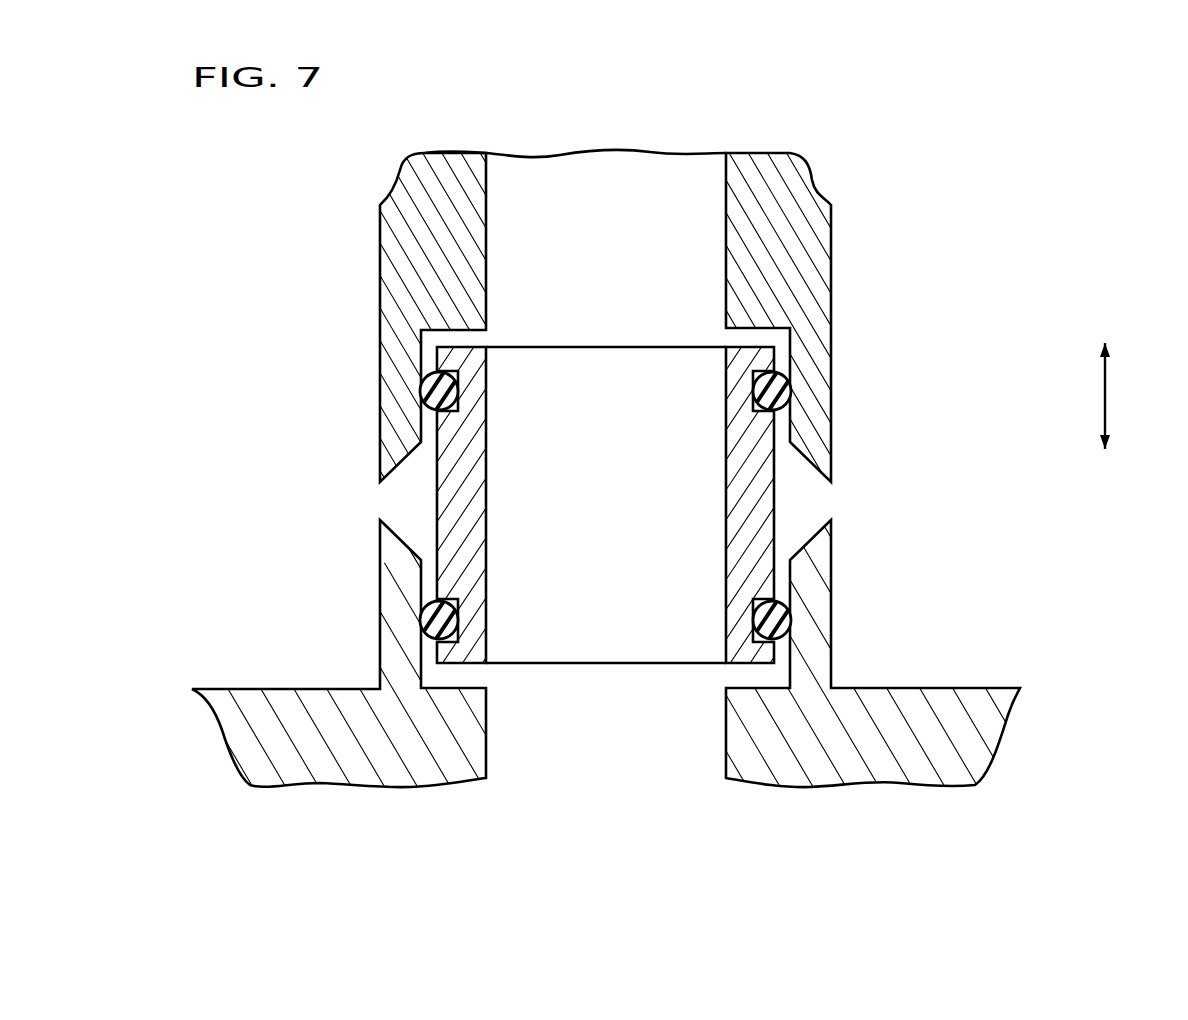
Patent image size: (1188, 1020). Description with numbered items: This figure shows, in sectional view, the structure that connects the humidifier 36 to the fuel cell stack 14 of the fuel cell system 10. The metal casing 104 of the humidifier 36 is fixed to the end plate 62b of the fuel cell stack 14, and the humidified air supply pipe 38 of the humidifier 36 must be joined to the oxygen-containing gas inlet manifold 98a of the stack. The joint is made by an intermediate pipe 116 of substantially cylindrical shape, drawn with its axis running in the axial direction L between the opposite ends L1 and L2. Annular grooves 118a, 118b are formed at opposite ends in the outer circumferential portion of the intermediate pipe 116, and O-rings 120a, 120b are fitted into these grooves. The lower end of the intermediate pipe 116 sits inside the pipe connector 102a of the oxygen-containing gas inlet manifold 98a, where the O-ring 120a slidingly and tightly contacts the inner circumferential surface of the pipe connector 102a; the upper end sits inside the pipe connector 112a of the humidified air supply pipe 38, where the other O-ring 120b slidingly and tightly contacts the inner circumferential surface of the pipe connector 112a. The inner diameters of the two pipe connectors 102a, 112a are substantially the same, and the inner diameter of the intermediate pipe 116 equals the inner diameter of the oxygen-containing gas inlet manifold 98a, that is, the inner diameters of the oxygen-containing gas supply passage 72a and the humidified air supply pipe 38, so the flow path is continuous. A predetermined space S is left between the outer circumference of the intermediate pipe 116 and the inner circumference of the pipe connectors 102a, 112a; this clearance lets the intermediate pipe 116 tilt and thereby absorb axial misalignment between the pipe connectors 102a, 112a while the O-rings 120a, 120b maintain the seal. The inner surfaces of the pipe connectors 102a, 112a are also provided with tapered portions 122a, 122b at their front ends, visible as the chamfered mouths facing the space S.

The fluid pressure device 10 is at (291, 218).
The fuel cell stack 14 is at (1002, 633).
The humidifier 36 is at (866, 304).
The humidified air supply pipe 38 is at (798, 255).
The end plate 62b is at (861, 797).
The oxygen-containing gas supply passage 72a is at (612, 740).
The oxygen-containing gas inlet manifold 98a is at (854, 691).
The pipe connector 102a is at (817, 547).
The casing 104 is at (880, 186).
The pipe connector 112a is at (822, 396).
The intermediate pipe 116 is at (779, 518).
The annular groove 118a is at (452, 620).
The annular groove 118b is at (452, 393).
The O-ring 120a is at (433, 622).
The O-ring 120b is at (433, 393).
The tapered portion 122a is at (407, 541).
The tapered portion 122b is at (405, 457).
The predetermined space S is at (515, 580).
The axial direction L is at (1117, 396).
The first axial direction L1 is at (1104, 459).
The second axial direction L2 is at (1105, 332).